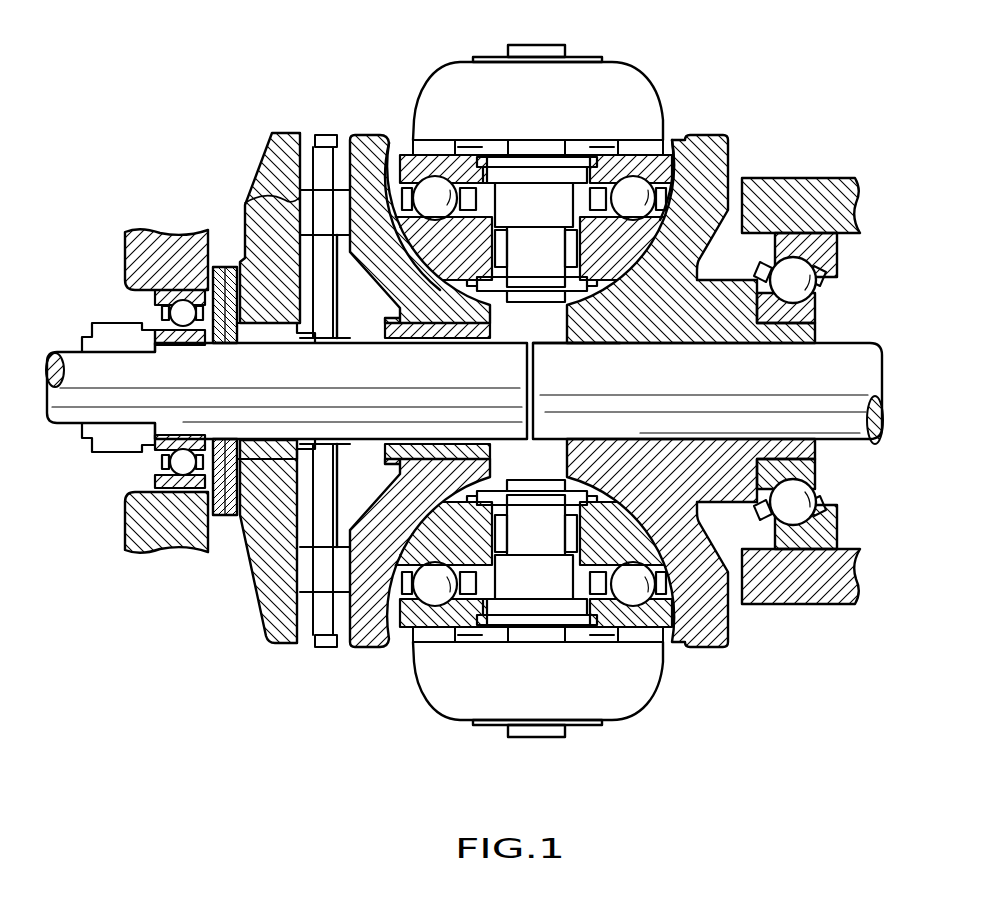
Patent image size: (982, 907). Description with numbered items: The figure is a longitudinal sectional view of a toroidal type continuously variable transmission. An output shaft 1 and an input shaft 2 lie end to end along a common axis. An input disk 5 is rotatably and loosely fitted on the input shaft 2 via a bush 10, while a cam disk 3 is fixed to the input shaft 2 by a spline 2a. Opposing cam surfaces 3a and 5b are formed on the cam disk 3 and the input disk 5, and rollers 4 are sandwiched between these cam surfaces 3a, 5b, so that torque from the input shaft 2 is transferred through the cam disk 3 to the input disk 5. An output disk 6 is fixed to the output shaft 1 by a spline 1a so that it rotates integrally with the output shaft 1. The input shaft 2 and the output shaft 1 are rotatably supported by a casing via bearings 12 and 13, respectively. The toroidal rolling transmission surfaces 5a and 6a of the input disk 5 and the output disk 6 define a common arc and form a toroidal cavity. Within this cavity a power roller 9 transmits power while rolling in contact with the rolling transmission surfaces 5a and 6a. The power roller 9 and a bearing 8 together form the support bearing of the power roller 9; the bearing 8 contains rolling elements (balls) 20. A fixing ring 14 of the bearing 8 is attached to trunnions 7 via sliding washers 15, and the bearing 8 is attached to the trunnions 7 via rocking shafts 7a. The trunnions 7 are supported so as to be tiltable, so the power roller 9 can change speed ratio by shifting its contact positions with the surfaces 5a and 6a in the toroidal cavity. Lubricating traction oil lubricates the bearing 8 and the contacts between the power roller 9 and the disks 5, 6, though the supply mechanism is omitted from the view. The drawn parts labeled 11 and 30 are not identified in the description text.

The output shaft 1 is at (797, 386).
The spline 1a is at (595, 348).
The input shaft 2 is at (215, 386).
The spline 2a is at (295, 336).
The cam disk 3 is at (268, 153).
The cam surface 3a is at (245, 203).
The rollers 4 is at (306, 155).
The input disk 5 is at (369, 135).
The rolling transmission surface 5a is at (393, 143).
The cam surface 5b is at (343, 170).
The output disk 6 is at (710, 135).
The rolling transmission surface 6a is at (668, 150).
The trunnions 7 is at (538, 70).
The rocking shafts 7a is at (526, 276).
The bearing 8 is at (462, 130).
The power roller 9 is at (615, 228).
The bush 10 is at (485, 332).
The support housing 11 is at (226, 520).
The bearing 12 is at (158, 466).
The bearing 13 is at (836, 520).
The fixing ring 14 is at (670, 163).
The sliding washers 15 is at (647, 137).
The rolling elements (balls) 20 is at (392, 314).
The ball bearing 30 is at (423, 212).